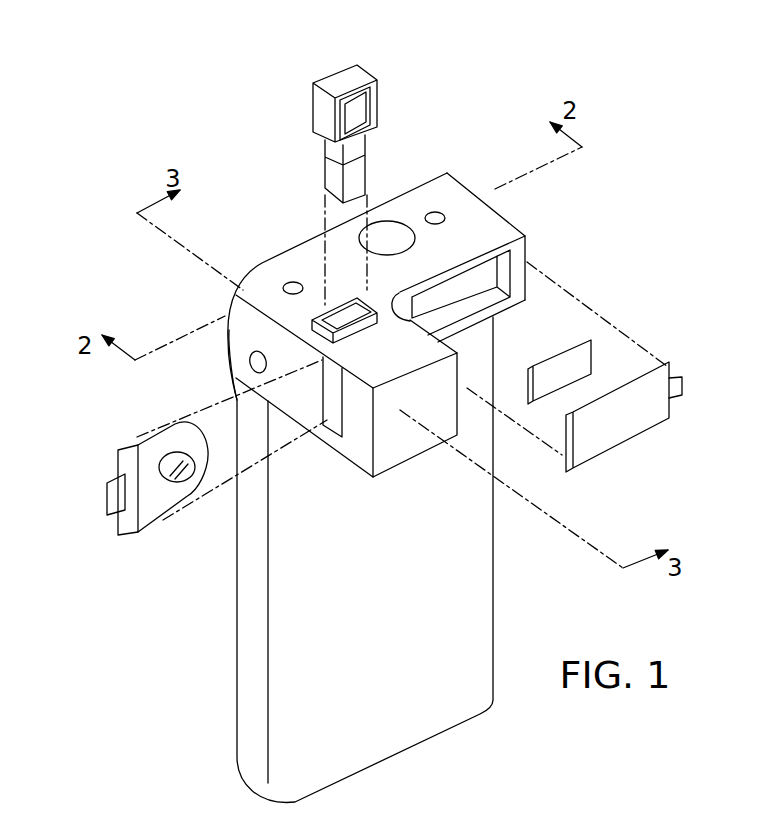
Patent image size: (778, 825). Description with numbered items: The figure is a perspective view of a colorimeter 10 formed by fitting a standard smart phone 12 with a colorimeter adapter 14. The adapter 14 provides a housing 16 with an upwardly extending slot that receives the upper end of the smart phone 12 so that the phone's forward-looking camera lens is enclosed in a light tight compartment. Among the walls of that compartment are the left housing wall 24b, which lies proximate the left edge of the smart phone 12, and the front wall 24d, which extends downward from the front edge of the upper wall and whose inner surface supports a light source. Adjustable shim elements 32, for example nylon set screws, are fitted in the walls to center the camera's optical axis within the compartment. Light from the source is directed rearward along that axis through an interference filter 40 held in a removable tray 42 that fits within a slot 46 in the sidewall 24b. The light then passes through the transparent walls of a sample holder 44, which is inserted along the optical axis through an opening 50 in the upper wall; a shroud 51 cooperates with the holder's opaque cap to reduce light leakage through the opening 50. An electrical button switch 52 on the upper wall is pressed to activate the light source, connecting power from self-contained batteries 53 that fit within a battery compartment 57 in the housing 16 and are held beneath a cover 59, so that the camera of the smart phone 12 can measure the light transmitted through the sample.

The colorimeter 10 is at (399, 426).
The smart phone 12 is at (398, 710).
The colorimeter adapter 14 is at (597, 309).
The housing 16 is at (352, 332).
The left housing wall 24b is at (248, 312).
The front wall 24d is at (400, 433).
The adjustable shim elements 32 is at (293, 285).
The interference filter 40 is at (172, 455).
The removable tray 42 is at (198, 471).
The sample holder 44 is at (385, 68).
The slot 46 is at (328, 410).
The opening 50 is at (345, 323).
The shroud 51 is at (228, 368).
The electrical button switch 52 is at (388, 235).
The batteries 53 is at (593, 357).
The battery compartment 57 is at (495, 283).
The cover 59 is at (623, 420).